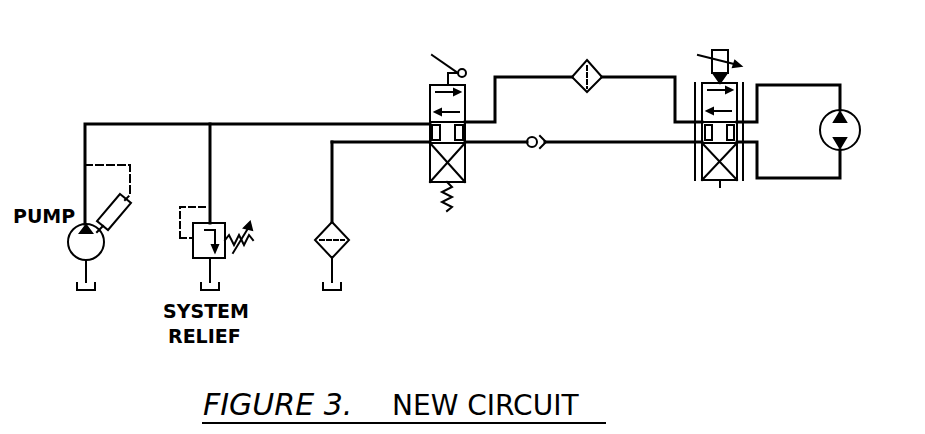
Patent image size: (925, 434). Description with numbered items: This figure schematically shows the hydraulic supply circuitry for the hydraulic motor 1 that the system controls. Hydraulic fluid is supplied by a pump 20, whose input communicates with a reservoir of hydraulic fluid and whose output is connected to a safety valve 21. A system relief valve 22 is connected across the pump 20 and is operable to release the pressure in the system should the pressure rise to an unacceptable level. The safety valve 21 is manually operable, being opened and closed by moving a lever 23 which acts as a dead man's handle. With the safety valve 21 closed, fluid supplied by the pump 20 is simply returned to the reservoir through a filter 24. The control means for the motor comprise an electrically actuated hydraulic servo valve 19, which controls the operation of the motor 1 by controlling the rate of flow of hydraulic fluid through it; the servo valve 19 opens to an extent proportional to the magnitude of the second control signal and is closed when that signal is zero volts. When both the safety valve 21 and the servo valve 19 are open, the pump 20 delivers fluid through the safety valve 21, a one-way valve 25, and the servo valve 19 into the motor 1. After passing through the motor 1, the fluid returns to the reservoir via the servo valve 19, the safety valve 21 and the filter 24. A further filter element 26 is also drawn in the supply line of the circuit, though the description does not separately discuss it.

The motor 1 is at (845, 147).
The servo valve 19 is at (720, 187).
The pump 20 is at (93, 260).
The safety valve 21 is at (462, 182).
The system relief valve 22 is at (226, 257).
The lever 23 is at (440, 78).
The filter 24 is at (342, 250).
The one-way valve 25 is at (535, 150).
The filter 26 is at (585, 61).